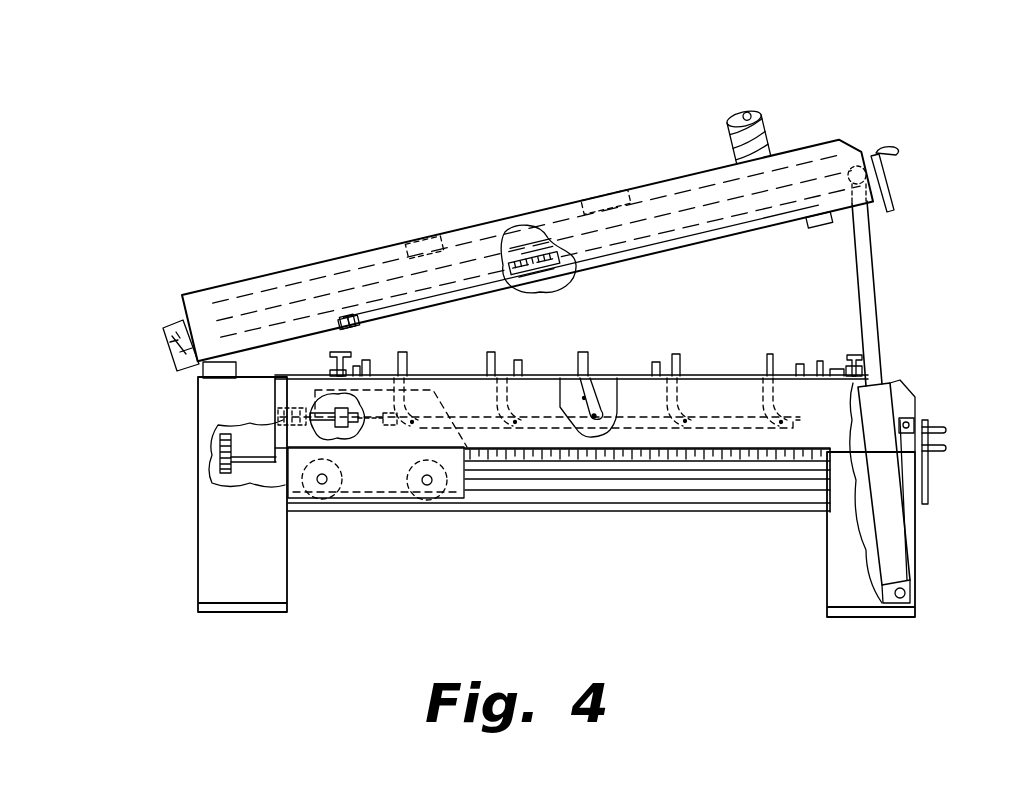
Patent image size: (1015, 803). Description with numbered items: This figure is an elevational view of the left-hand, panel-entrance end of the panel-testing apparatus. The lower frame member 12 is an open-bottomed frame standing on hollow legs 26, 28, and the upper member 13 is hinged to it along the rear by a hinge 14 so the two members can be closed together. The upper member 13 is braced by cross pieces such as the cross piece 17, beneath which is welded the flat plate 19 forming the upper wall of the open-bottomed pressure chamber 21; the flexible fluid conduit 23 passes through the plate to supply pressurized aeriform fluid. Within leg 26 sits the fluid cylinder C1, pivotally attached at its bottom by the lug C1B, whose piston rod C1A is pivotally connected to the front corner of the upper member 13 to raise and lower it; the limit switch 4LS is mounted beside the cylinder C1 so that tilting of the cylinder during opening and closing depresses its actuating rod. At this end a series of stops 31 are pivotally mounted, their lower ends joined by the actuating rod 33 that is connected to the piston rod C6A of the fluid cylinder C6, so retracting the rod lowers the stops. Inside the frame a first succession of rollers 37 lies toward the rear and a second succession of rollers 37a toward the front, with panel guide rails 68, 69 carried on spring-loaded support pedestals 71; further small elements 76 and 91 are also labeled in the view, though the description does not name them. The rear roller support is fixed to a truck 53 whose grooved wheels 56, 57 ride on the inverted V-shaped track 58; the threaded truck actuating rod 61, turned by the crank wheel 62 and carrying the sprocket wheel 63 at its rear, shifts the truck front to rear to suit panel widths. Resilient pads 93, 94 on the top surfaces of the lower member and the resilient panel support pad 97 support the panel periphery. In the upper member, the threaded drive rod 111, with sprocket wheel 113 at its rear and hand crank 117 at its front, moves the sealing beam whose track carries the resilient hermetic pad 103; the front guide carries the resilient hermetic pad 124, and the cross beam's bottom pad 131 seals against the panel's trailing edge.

The lower frame member 12 is at (738, 410).
The upper member 13 is at (671, 178).
The hinge 14 is at (206, 366).
The cross piece 17 is at (572, 197).
The flat plate 19 is at (524, 238).
The pressure chamber 21 is at (516, 276).
The fluid conduit 23 is at (765, 134).
The hollow leg 26 is at (846, 603).
The hollow leg 28 is at (212, 563).
The stop 31 is at (673, 357).
The actuating rod 33 is at (580, 418).
The roller 37 is at (368, 365).
The roller 37a is at (819, 360).
The truck 53 is at (470, 486).
The grooved wheel 56 is at (318, 495).
The grooved wheel 57 is at (428, 496).
The track 58 is at (496, 500).
The truck actuating rod 61 is at (810, 454).
The crank wheel 62 is at (946, 440).
The sprocket wheel 63 is at (226, 475).
The panel guide rail 68 is at (328, 354).
The panel guide rail 69 is at (856, 366).
The support pedestal 71 is at (325, 375).
The standoff pin 76 is at (518, 360).
The cam bar 91 is at (930, 498).
The resilient pad 93 is at (345, 330).
The resilient pad 94 is at (836, 377).
The resilient panel support pad 97 is at (684, 374).
The resilient hermetic pad 103 is at (352, 332).
The drive rod 111 is at (553, 258).
The sprocket wheel 113 is at (166, 346).
The hand crank 117 is at (889, 189).
The resilient hermetic pad 124 is at (818, 229).
The resilient sealing pad 131 is at (738, 240).
The fluid cylinder C1 is at (900, 546).
The piston rod C1A is at (874, 316).
The lug C1B is at (912, 591).
The fluid cylinder C6 is at (318, 413).
The piston rod C6A is at (350, 428).
The limit switch 4LS is at (912, 423).